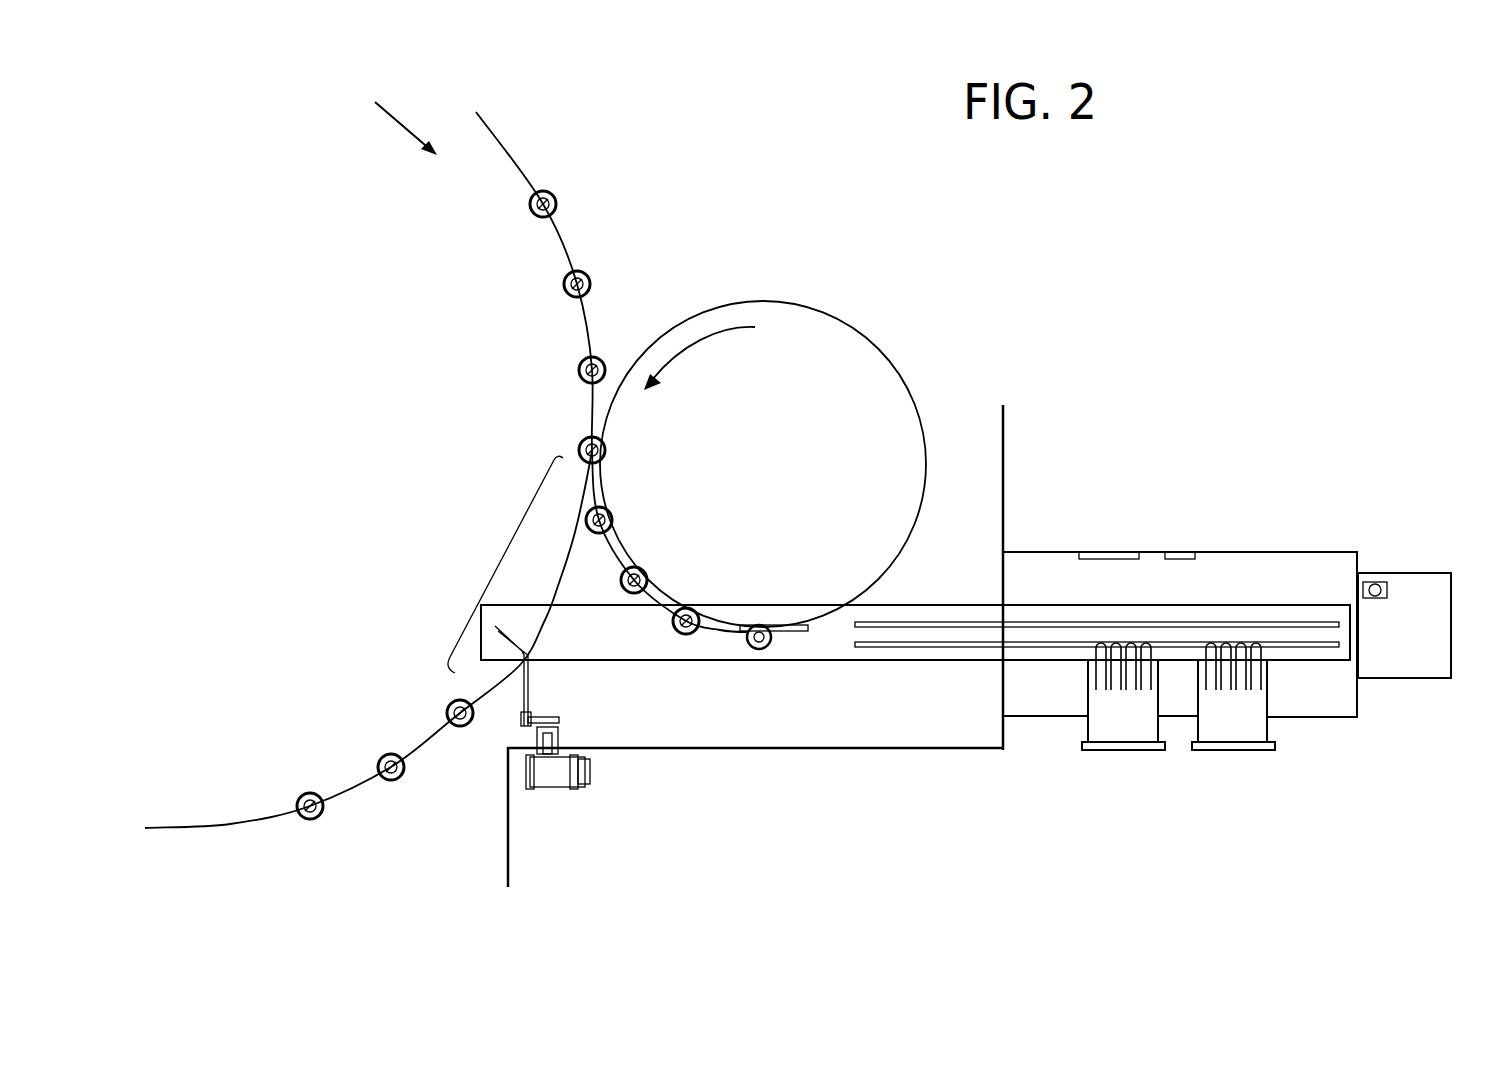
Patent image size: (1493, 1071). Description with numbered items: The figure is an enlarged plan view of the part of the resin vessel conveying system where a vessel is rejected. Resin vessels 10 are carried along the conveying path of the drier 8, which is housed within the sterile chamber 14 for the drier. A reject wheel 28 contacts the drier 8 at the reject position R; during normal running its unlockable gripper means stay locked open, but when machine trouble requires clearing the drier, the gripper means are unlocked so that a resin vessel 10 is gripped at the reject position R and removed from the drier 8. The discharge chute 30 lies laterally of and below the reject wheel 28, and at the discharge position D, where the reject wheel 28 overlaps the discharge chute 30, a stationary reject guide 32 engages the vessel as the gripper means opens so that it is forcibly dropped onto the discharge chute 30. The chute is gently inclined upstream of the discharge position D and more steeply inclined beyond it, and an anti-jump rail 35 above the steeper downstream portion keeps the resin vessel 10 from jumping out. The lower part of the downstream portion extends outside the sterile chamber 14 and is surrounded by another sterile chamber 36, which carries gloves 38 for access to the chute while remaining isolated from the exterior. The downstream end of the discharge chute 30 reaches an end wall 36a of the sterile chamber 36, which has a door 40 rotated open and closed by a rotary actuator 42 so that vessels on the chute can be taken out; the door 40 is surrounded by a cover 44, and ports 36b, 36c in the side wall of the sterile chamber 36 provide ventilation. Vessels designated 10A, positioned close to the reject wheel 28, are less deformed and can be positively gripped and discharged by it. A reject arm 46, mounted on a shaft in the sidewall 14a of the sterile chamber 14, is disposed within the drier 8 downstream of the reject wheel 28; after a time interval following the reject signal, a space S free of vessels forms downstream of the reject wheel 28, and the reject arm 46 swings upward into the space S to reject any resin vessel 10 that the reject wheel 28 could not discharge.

The drier 8 is at (526, 144).
The resin vessel 10 is at (530, 205).
The resin vessels close to the reject wheel 10A is at (612, 514).
The reject position R is at (542, 436).
The space S is at (506, 563).
The reject wheel 28 is at (825, 312).
The discharge chute 30 is at (959, 675).
The reject guide 32 is at (797, 626).
The discharge position D is at (758, 652).
The sterile chamber for the drier 14 is at (1005, 440).
The sidewall of the sterile chamber 14a is at (641, 751).
The anti-jump rail 35 is at (1033, 620).
The sterile chamber for the discharge chute 36 is at (1251, 551).
The end wall 36a is at (1360, 560).
The port 36b is at (1106, 551).
The port 36c is at (1181, 551).
The gloves 38 is at (1228, 752).
The door 40 is at (1360, 642).
The rotary actuator 42 is at (1380, 585).
The cover 44 is at (1441, 573).
The reject arm 46 is at (530, 651).